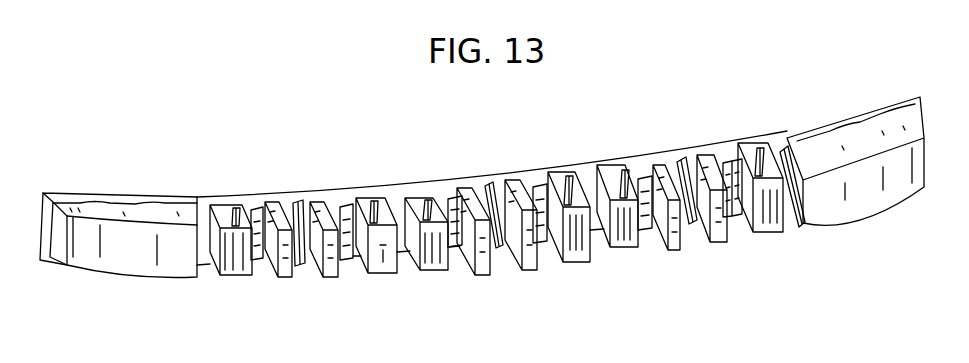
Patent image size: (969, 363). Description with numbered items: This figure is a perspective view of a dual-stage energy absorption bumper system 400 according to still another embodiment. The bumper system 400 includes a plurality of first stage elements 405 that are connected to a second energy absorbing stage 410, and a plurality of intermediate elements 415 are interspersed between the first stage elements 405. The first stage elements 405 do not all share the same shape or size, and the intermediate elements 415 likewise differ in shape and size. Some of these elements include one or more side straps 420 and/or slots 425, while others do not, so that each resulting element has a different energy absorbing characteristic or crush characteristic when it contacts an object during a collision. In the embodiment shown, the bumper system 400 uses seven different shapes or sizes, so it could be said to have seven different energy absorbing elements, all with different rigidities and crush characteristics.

The bumper system 400 is at (499, 150).
The first stage element 405 is at (335, 283).
The second energy absorbing stage 410 is at (85, 190).
The intermediate element 415 is at (297, 272).
The side strap 420 is at (207, 228).
The slot 425 is at (362, 206).